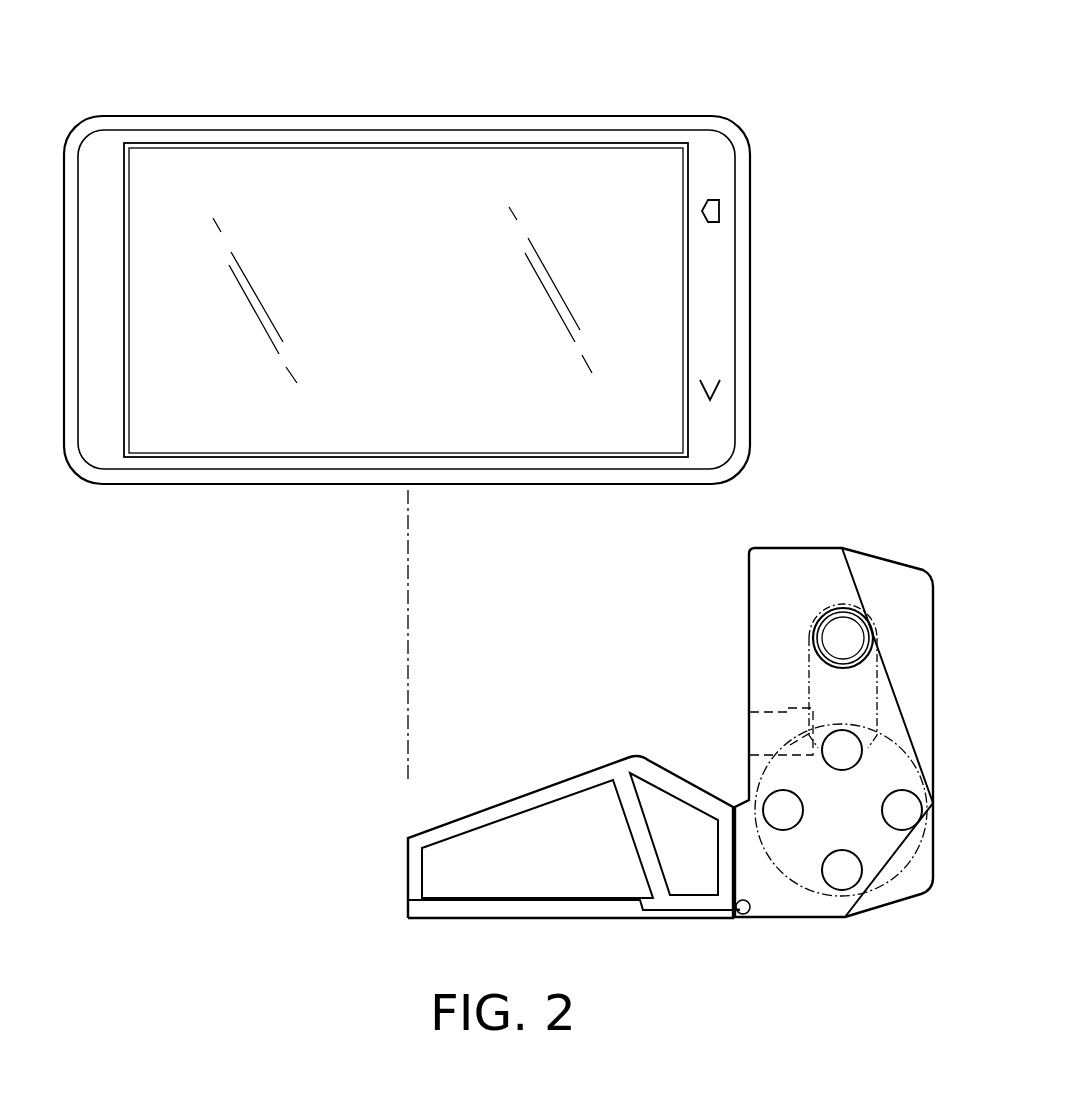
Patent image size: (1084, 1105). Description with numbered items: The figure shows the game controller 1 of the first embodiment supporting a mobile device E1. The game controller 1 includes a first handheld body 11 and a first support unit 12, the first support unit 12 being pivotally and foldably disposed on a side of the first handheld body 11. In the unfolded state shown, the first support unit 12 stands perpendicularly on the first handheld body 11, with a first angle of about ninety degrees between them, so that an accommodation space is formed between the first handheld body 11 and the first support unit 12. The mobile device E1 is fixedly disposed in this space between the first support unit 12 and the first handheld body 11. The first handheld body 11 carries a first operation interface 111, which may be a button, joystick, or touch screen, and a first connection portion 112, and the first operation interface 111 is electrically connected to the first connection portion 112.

The mobile device E1 is at (408, 115).
The game controller 1 is at (674, 701).
The first handheld body 11 is at (798, 709).
The first operation interface 111 is at (806, 669).
The first connection portion 112 is at (765, 730).
The first support unit 12 is at (600, 920).